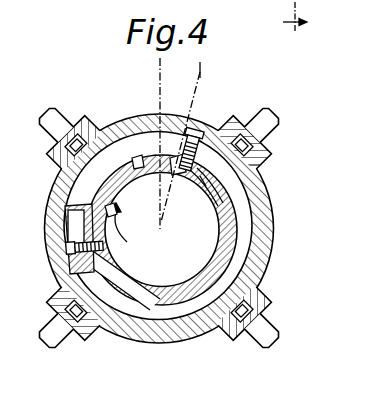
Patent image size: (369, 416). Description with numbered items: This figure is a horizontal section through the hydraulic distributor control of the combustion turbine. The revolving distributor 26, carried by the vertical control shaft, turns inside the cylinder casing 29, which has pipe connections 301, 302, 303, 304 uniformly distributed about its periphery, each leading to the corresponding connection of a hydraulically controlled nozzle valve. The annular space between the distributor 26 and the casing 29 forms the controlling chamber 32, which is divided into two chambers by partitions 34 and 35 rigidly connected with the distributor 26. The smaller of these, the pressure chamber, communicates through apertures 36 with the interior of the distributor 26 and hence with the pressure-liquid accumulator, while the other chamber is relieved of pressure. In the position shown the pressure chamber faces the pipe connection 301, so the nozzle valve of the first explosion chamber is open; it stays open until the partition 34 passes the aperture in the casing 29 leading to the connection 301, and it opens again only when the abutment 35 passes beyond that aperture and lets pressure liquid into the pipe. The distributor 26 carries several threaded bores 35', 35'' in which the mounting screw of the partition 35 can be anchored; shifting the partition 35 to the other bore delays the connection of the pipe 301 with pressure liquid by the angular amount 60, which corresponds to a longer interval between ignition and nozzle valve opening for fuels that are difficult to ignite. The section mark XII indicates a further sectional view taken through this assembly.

The distributor 26 is at (100, 188).
The cylinder casing 29 is at (267, 211).
The pipe connection 301 is at (53, 124).
The pipe connection 302 is at (262, 131).
The pipe connection 303 is at (268, 341).
The pipe connection 304 is at (62, 337).
The controlling chamber 32 is at (152, 322).
The partition 34 is at (68, 252).
The partition 35 is at (206, 144).
The threaded bore 35' is at (133, 203).
The threaded bore 35'' is at (190, 197).
The apertures 36 is at (135, 158).
The angular amount 60 is at (164, 71).
The section line XII is at (274, 17).